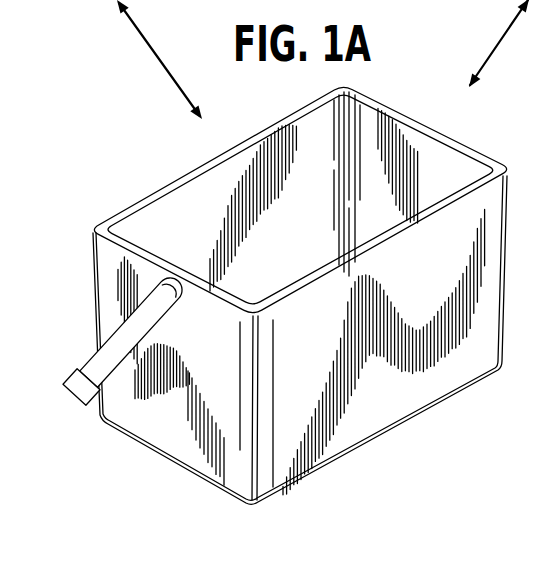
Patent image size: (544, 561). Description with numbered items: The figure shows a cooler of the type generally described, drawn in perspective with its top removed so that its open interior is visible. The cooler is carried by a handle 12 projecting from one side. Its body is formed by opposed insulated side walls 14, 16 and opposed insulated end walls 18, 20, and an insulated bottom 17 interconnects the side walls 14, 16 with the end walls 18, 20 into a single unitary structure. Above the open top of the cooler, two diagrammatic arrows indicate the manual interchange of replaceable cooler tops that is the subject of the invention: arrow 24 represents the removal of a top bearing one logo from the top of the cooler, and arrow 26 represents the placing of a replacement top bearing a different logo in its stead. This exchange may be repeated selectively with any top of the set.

The handle 12 is at (76, 370).
The insulated side wall 14 is at (200, 167).
The insulated side wall 16 is at (386, 250).
The insulated bottom 17 is at (415, 420).
The insulated end wall 18 is at (175, 435).
The insulated end wall 20 is at (461, 144).
The arrow 24 is at (143, 33).
The arrow 26 is at (525, 6).